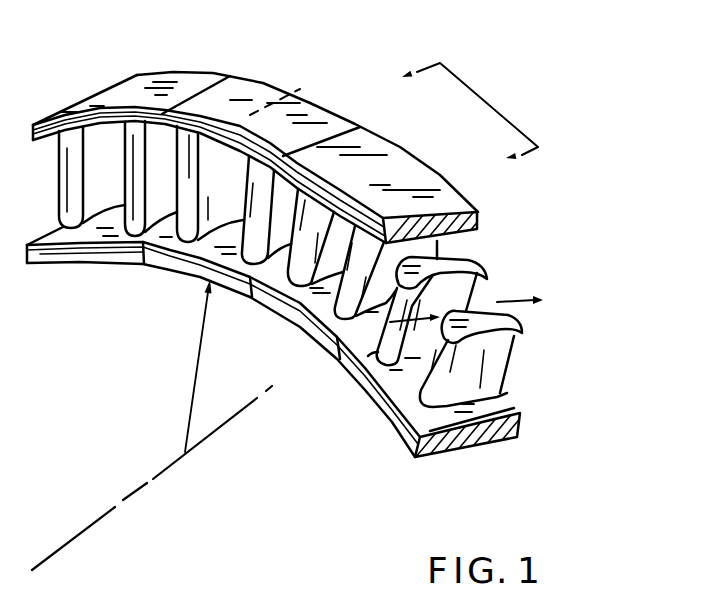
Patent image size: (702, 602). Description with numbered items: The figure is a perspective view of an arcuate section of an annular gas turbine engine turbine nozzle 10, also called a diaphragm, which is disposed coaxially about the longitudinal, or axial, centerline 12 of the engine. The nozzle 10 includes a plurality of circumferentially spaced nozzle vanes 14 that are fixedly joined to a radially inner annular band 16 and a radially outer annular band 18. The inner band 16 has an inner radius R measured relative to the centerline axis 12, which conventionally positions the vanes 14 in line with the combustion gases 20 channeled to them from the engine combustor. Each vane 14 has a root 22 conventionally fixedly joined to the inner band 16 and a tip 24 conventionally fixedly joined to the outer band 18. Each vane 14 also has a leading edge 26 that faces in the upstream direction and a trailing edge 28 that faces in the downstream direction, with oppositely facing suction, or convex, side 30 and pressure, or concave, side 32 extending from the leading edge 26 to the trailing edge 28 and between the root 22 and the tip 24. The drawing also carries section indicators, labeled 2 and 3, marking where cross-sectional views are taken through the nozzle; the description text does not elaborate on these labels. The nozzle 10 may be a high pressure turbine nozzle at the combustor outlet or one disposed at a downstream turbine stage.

The turbine nozzle 10 is at (138, 62).
The centerline 12 is at (112, 505).
The nozzle vane 14 is at (527, 358).
The inner band 16 is at (533, 398).
The outer band 18 is at (476, 200).
The combustion gases 20 is at (348, 374).
The root 22 is at (408, 440).
The tip 24 is at (515, 316).
The leading edge 26 is at (374, 407).
The trailing edge 28 is at (513, 368).
The suction side 30 is at (487, 280).
The pressure side 32 is at (522, 340).
The section line 2- 2 is at (155, 178).
The section line 3- 3 is at (472, 110).
The inner radius R is at (193, 372).